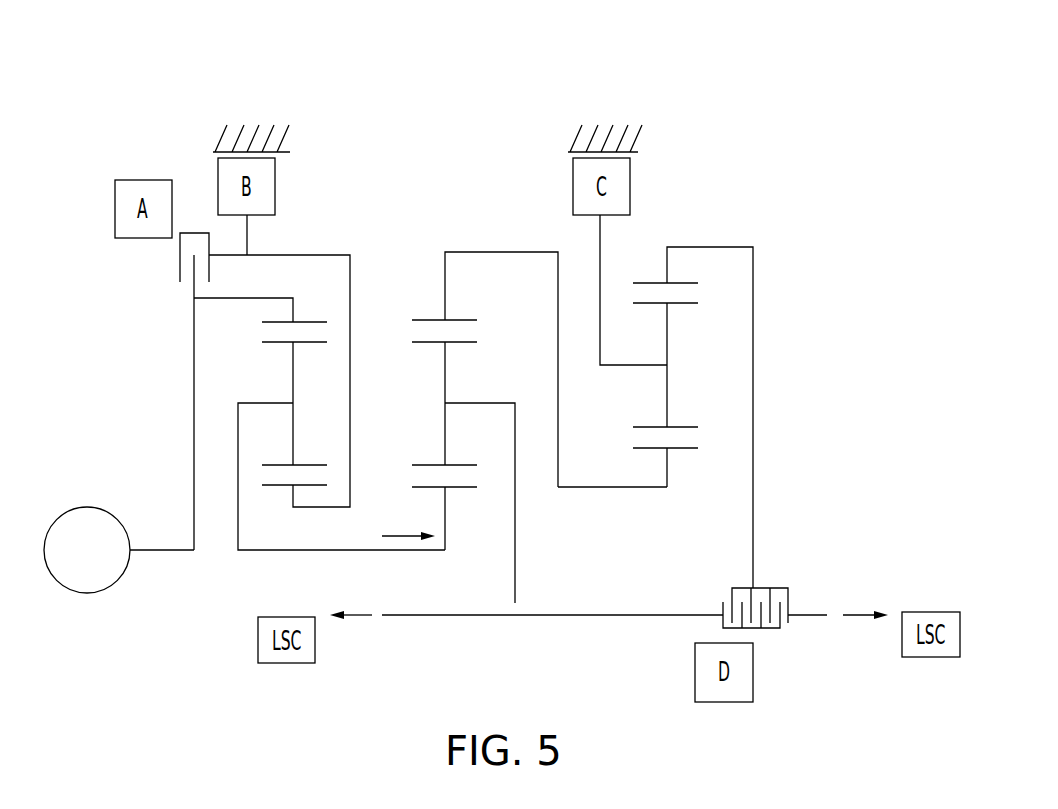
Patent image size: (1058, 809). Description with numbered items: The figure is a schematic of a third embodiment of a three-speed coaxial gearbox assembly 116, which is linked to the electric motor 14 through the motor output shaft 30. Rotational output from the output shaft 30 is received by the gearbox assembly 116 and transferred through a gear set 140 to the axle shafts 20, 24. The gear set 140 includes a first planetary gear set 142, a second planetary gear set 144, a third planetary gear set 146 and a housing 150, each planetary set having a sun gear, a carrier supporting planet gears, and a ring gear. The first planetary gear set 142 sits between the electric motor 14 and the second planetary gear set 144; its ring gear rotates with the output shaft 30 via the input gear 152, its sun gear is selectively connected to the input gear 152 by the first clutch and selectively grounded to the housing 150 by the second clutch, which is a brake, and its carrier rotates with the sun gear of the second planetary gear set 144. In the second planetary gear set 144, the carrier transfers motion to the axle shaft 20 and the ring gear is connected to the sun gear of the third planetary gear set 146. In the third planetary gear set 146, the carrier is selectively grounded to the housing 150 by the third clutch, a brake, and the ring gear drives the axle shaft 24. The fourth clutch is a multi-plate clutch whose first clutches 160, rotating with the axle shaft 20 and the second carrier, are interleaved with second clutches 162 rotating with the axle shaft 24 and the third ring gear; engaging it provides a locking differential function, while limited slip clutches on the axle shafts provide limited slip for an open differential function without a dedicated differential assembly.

The electric motor 14 is at (90, 508).
The motor output shaft 30 is at (155, 552).
The gearbox assembly 116 is at (772, 90).
The gear set 140 is at (529, 88).
The first planetary gear set 142 is at (314, 228).
The second planetary gear set 144 is at (505, 231).
The third planetary gear set 146 is at (712, 231).
The housing 150 is at (265, 150).
The input gear 152 is at (193, 350).
The axle shaft 20 is at (455, 620).
The axle shaft 24 is at (815, 618).
The first clutches 160 is at (770, 648).
The second clutches 162 is at (765, 611).